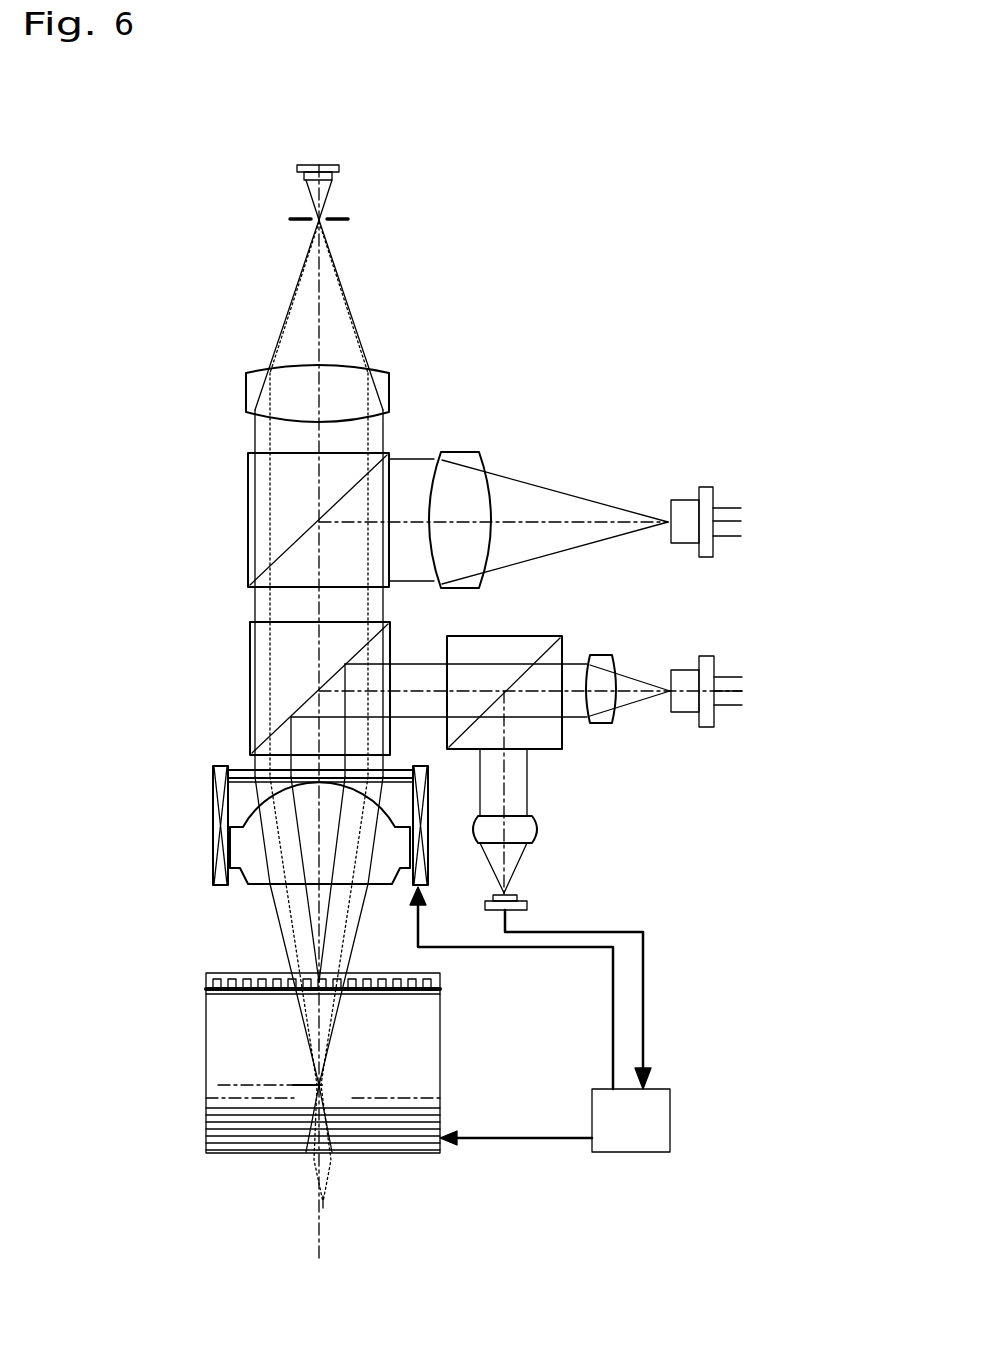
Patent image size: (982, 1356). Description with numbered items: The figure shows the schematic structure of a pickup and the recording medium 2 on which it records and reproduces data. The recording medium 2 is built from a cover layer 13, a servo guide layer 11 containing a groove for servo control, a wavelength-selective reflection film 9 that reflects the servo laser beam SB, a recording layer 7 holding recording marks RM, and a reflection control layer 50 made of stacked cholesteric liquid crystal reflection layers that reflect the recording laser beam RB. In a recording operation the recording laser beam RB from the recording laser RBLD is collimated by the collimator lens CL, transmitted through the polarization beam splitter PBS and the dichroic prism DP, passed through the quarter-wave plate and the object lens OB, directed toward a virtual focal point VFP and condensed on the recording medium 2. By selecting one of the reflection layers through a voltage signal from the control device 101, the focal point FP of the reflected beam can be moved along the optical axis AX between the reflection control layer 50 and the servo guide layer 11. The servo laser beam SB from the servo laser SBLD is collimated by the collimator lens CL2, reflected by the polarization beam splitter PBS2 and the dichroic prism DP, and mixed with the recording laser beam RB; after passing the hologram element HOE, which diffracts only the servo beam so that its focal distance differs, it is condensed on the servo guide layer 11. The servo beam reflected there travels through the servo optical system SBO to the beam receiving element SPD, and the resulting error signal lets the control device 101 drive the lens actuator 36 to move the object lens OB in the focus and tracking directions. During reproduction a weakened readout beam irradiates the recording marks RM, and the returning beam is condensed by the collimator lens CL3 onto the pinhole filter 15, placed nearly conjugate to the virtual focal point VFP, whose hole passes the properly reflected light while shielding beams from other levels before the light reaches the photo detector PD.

The photo detector PD is at (338, 170).
The pinhole filter 15 is at (346, 213).
The collimator lens CL3 is at (388, 371).
The polarization beam splitter PBS is at (246, 515).
The collimator lens CL is at (481, 450).
The recording laser beam RB is at (548, 490).
The recording laser RBLD is at (712, 553).
The dichroic prism DP is at (247, 652).
The polarization beam splitter PBS2 is at (558, 638).
The collimator lens CL2 is at (608, 655).
The servo laser SBLD is at (707, 718).
The servo laser beam SB is at (625, 705).
The hologram element HOE is at (262, 768).
The lens actuator 36 is at (215, 828).
The object lens OB is at (237, 850).
The servo optical system SBO is at (540, 838).
The beam receiving element SPD is at (520, 896).
The cover layer 13 is at (205, 974).
The servo guide layer 11 is at (205, 986).
The wavelength-selective reflection film 9 is at (205, 993).
The recording layer 7 is at (432, 1050).
The reflection control layer 50 is at (205, 1135).
The recording marks RM is at (290, 1100).
The focal point FP is at (322, 1085).
The recording medium 2 is at (87, 1217).
The optical axis AX is at (323, 736).
The virtual focal point VFP is at (323, 1207).
The control device 101 is at (668, 1150).